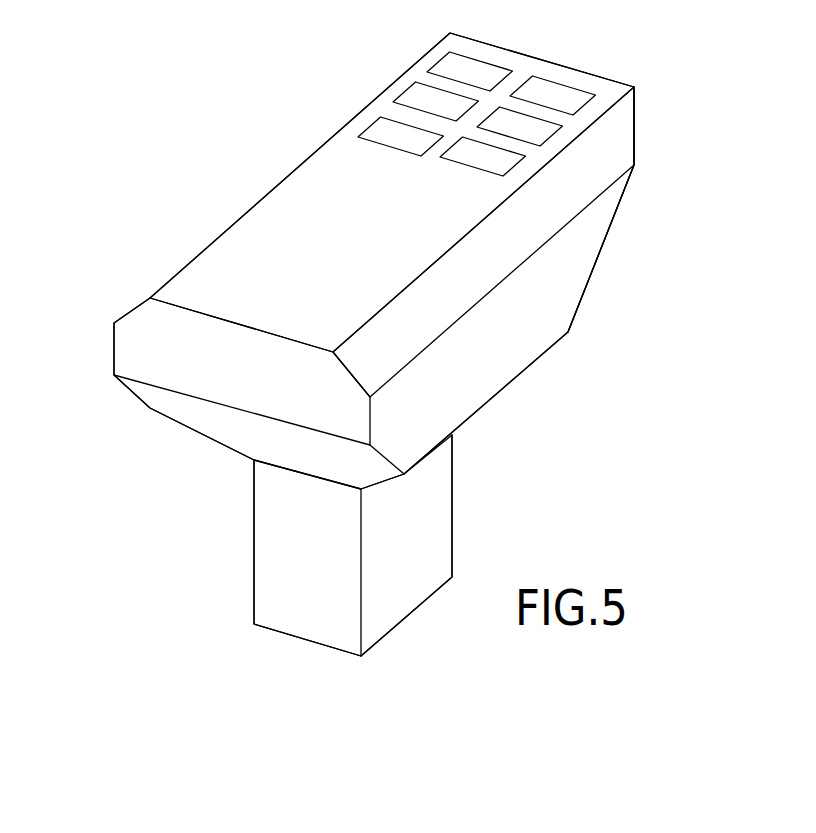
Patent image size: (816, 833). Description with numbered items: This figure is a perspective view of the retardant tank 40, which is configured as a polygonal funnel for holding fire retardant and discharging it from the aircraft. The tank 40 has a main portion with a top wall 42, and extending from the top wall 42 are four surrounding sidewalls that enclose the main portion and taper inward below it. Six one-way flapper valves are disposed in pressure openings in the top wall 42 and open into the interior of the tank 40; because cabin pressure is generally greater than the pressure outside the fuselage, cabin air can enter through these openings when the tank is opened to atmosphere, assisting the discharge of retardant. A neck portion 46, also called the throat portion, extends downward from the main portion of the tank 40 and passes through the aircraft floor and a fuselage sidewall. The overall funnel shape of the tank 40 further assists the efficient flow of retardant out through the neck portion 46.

The tank 40 is at (190, 175).
The top wall 42 is at (298, 170).
The neck portion 46 is at (452, 507).